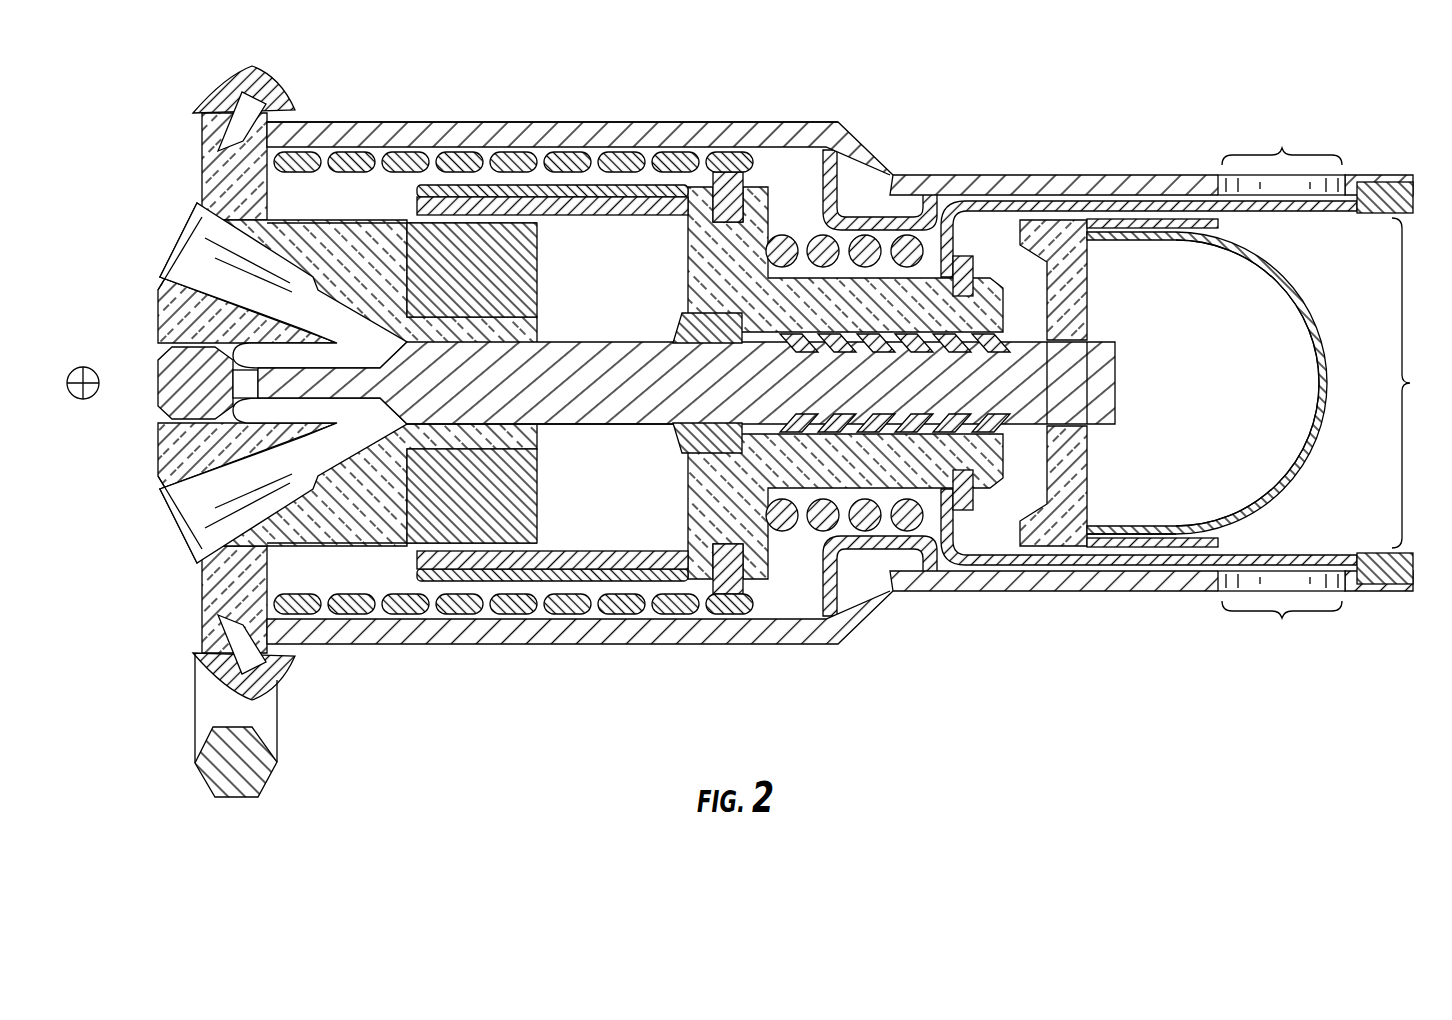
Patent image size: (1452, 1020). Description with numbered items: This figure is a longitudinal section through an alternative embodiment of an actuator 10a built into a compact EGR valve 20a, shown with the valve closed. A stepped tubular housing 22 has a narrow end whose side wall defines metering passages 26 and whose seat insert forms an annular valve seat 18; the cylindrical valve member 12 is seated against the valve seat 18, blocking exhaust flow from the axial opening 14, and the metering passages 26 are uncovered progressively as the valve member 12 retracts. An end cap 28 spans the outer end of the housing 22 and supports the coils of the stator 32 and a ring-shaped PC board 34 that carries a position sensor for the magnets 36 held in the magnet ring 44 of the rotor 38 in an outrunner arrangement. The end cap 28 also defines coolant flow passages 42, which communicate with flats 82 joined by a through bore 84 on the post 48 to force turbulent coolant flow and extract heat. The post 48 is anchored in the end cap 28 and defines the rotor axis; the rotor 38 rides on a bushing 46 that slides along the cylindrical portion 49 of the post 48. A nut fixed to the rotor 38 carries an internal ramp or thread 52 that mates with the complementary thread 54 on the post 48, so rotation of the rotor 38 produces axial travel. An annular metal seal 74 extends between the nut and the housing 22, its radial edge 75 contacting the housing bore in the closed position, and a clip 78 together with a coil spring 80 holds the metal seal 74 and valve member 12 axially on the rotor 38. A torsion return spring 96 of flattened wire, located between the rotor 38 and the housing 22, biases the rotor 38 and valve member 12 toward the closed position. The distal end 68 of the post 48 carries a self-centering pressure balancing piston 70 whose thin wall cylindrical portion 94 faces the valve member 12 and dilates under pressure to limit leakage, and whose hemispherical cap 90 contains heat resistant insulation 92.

The actuator 10a is at (483, 117).
The housing 22 is at (665, 118).
The compact EGR valve 20a is at (1033, 170).
The metal seal 74 is at (872, 212).
The ramp or thread 54 is at (868, 338).
The ramp or thread 52 is at (807, 337).
The thin wall cylindrical portion 94 is at (1170, 224).
The metering passages 26 is at (1281, 383).
The distal end 68 is at (1100, 342).
The axial opening 14 is at (1416, 383).
The heat resistant insulation 92 is at (1218, 405).
The hemispherical cap 90 is at (1287, 492).
The flats 82 is at (253, 356).
The through bore 84 is at (240, 385).
The coolant flow passage 42 is at (195, 515).
The end cap 28 is at (203, 582).
The PC board 34 is at (404, 540).
The magnets 36 is at (447, 564).
The magnet ring 44 is at (515, 575).
The torsion return spring 96 is at (620, 607).
The rotor 38 is at (757, 590).
The coil spring 80 is at (783, 530).
The annular radial edge 75 is at (843, 600).
The clip 78 is at (970, 515).
The valve member 12 is at (1110, 560).
The pressure balancing piston 70 is at (1165, 540).
The valve seat 18 is at (1410, 570).
The post 48 is at (623, 402).
The cylindrical portion 49 is at (565, 430).
The stator 32 is at (503, 515).
The bushing 46 is at (695, 445).